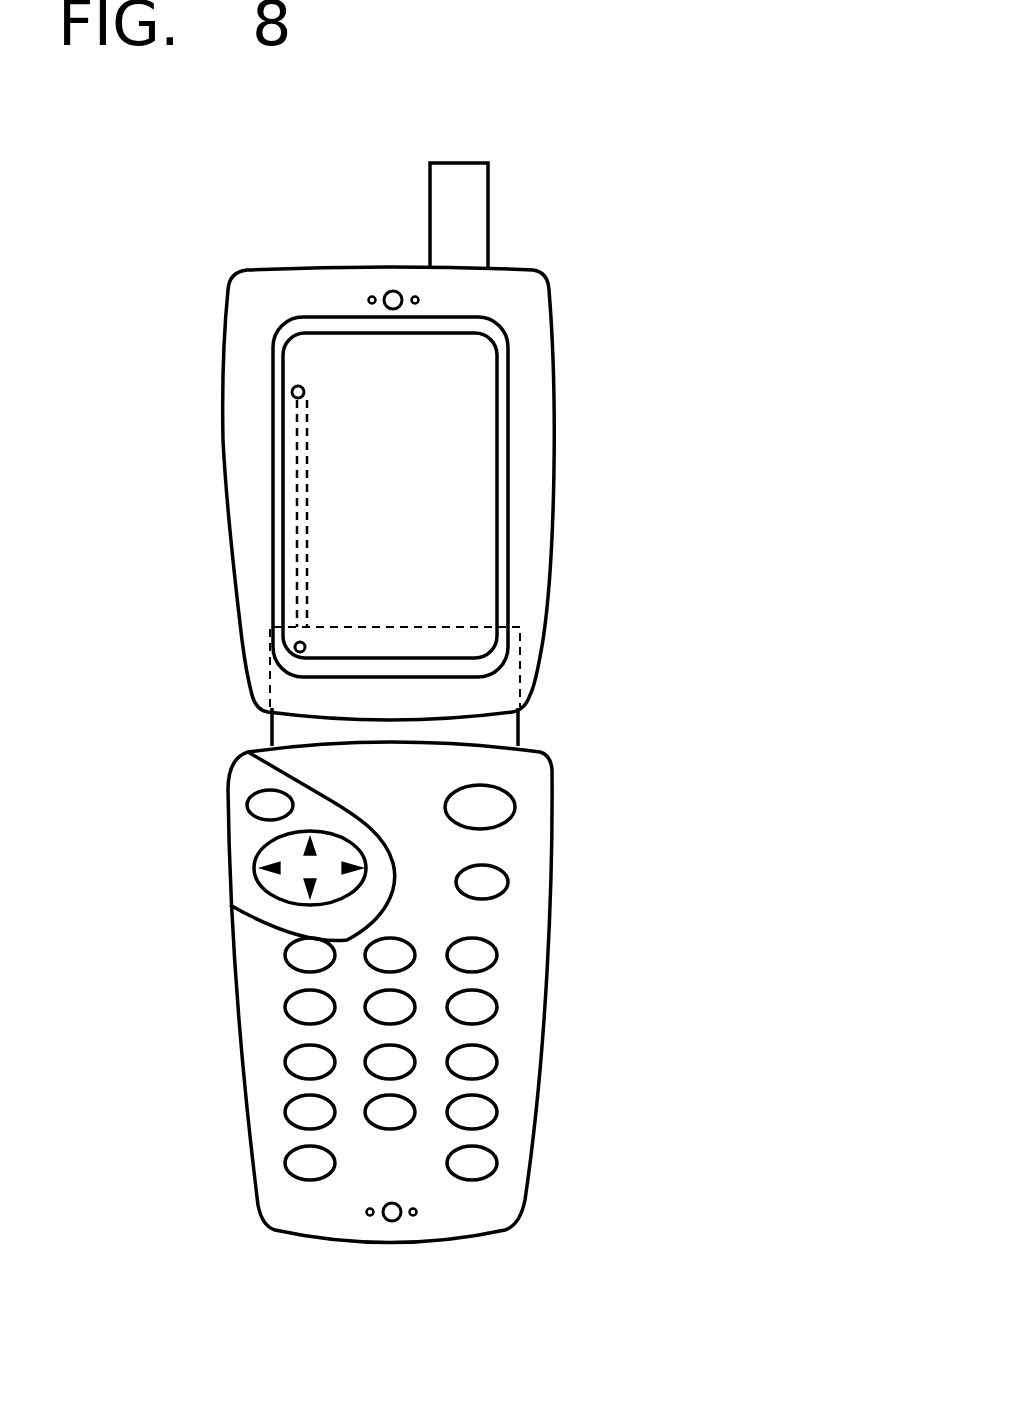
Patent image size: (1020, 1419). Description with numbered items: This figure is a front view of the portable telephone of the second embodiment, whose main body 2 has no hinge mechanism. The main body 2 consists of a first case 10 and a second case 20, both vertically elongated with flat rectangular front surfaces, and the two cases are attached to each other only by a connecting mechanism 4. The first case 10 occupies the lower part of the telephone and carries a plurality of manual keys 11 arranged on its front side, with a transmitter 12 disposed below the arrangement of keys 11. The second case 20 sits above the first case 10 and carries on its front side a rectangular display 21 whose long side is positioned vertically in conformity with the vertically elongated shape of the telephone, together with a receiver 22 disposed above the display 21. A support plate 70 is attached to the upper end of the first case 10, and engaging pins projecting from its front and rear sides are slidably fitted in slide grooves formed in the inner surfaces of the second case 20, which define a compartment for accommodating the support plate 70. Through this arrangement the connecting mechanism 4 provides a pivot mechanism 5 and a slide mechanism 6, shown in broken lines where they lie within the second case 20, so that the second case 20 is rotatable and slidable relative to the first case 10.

The main body 2 is at (162, 194).
The connecting mechanism 4 is at (320, 562).
The pivot mechanism 5 is at (350, 682).
The slide mechanism 6 is at (282, 485).
The first case 10 is at (523, 865).
The manual keys 11 is at (483, 955).
The transmitter 12 is at (392, 1215).
The second case 20 is at (535, 400).
The display 21 is at (477, 558).
The receiver 22 is at (400, 297).
The support plate 70 is at (507, 735).